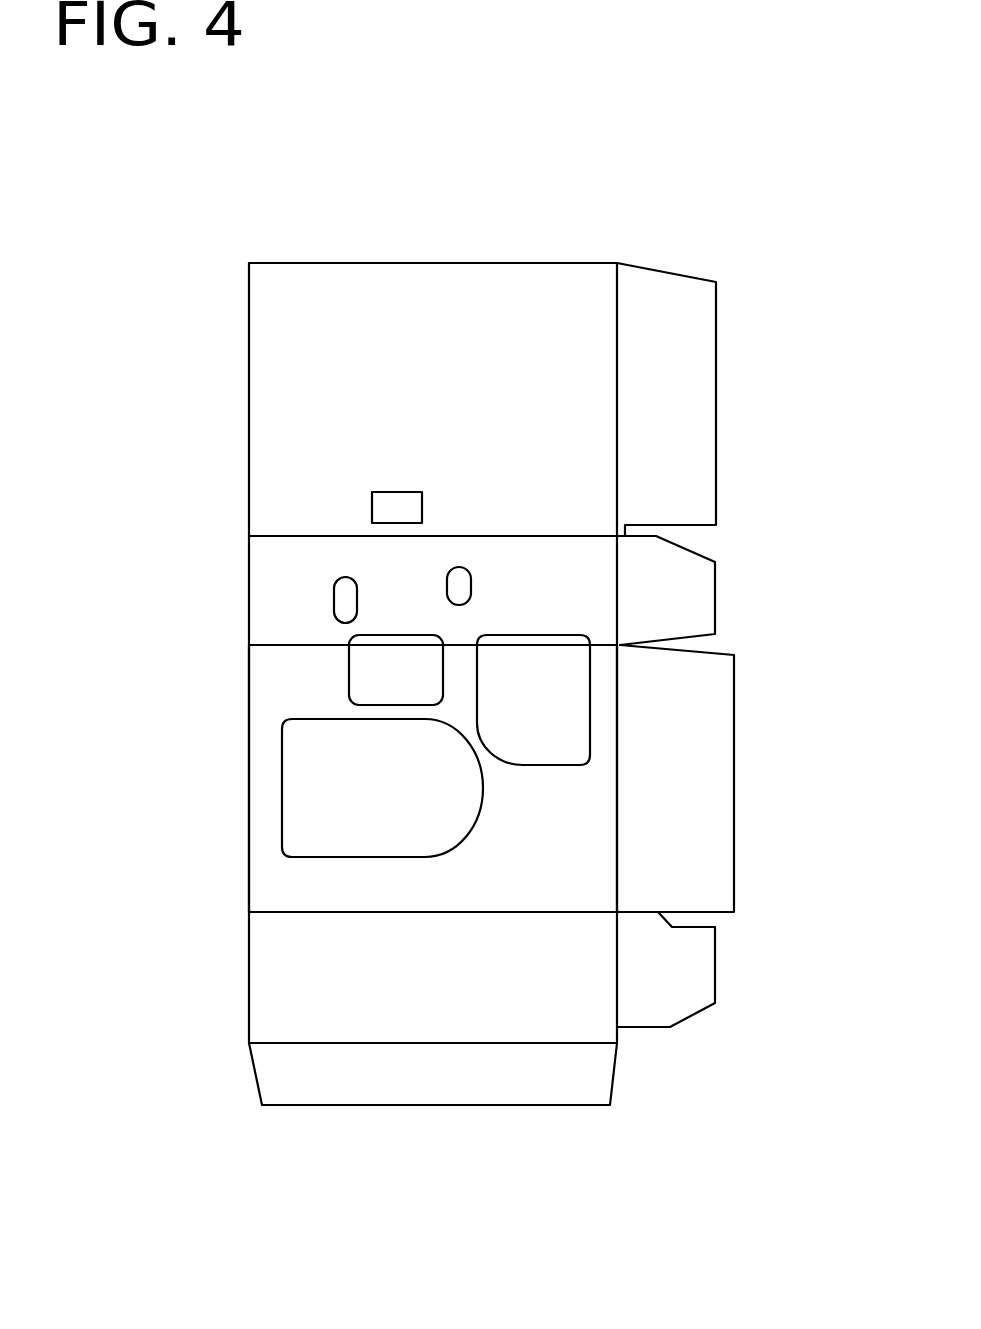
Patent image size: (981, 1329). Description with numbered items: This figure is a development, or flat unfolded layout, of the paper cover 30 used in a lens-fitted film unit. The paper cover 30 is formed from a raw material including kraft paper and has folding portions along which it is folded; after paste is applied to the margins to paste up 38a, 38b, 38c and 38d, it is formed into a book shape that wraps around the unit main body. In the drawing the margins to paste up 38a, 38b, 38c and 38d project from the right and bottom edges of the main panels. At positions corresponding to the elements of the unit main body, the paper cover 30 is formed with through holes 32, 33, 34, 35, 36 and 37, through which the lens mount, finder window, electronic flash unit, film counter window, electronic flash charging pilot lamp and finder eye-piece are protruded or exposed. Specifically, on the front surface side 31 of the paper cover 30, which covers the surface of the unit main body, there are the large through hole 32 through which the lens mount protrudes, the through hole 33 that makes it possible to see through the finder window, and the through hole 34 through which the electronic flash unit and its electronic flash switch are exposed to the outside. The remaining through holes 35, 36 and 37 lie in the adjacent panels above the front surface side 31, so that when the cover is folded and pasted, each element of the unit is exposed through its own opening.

The paper cover 30 is at (243, 305).
The front surface side 31 is at (292, 892).
The large through hole 32 is at (282, 812).
The through hole 33 is at (349, 678).
The through hole 34 is at (477, 718).
The through hole 35 is at (334, 601).
The through hole 36 is at (447, 582).
The through hole 37 is at (372, 507).
The margin to paste up 38a is at (735, 785).
The margin to paste up 38b is at (540, 1080).
The margin to paste up 38c is at (656, 589).
The margin to paste up 38d is at (685, 961).